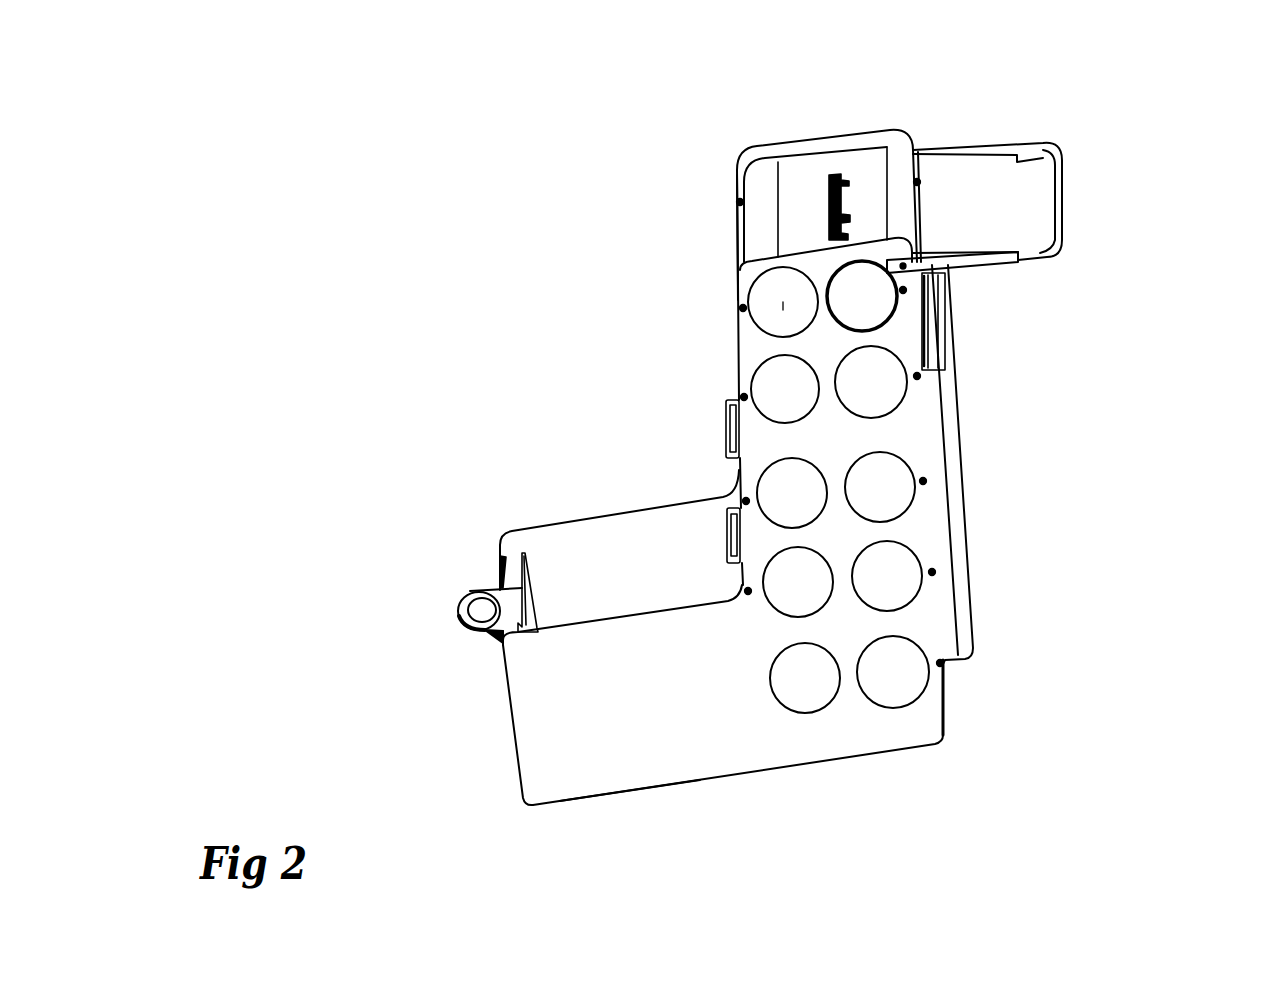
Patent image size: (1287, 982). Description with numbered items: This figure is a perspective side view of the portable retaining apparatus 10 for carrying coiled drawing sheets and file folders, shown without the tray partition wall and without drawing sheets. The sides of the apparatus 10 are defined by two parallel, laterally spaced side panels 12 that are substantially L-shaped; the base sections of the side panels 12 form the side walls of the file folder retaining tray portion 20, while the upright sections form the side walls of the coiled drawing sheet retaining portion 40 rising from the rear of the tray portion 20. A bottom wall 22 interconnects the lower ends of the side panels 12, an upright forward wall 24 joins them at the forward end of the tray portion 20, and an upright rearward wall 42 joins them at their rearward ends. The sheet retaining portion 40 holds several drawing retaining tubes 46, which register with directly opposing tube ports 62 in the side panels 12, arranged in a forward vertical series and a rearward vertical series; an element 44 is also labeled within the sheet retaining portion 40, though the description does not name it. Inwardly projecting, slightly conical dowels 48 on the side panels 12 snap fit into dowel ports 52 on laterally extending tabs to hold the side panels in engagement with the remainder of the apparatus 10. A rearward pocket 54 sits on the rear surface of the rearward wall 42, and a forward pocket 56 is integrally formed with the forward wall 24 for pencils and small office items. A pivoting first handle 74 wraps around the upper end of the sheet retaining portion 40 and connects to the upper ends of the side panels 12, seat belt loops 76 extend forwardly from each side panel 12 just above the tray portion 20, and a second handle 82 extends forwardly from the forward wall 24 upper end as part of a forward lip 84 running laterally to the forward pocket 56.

The portable retaining apparatus 10 is at (1133, 150).
The side panel 12 is at (612, 538).
The file folder retaining tray portion 20 is at (515, 390).
The bottom wall 22 is at (628, 790).
The forward wall 24 is at (548, 622).
The coiled drawing sheet retaining portion 40 is at (810, 130).
The rearward wall 42 is at (915, 251).
The back panel 44 is at (800, 195).
The drawing retaining tube 46 is at (838, 408).
The dowel 48 is at (741, 308).
The dowel port 52 is at (737, 203).
The rearward pocket 54 is at (958, 397).
The forward pocket 56 is at (515, 562).
The tube port 62 is at (780, 302).
The first handle 74 is at (1064, 211).
The seat belt loop 76 is at (726, 417).
The second handle 82 is at (463, 613).
The forward lip 84 is at (500, 634).